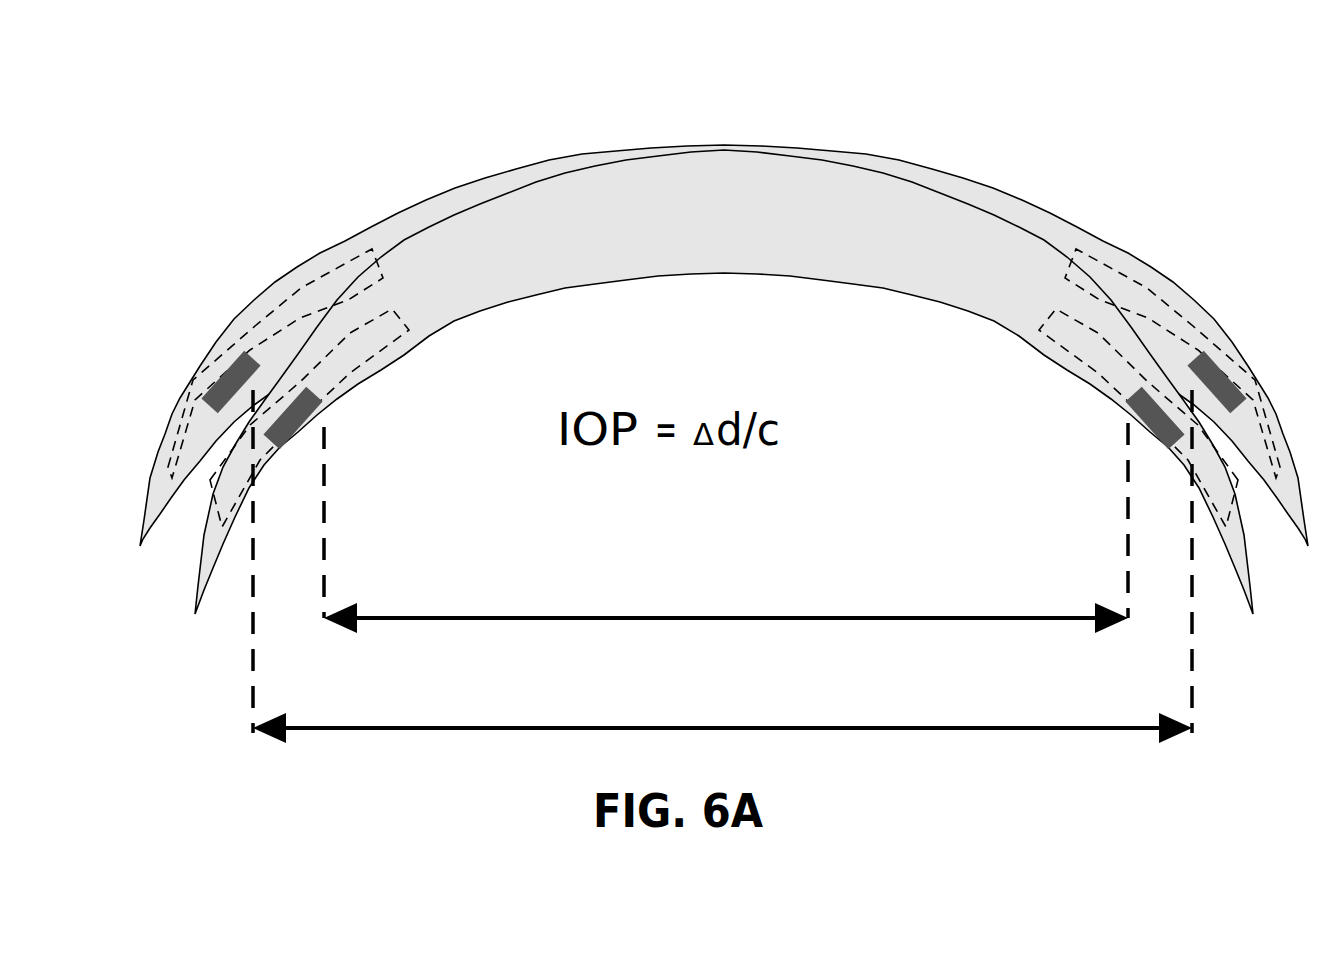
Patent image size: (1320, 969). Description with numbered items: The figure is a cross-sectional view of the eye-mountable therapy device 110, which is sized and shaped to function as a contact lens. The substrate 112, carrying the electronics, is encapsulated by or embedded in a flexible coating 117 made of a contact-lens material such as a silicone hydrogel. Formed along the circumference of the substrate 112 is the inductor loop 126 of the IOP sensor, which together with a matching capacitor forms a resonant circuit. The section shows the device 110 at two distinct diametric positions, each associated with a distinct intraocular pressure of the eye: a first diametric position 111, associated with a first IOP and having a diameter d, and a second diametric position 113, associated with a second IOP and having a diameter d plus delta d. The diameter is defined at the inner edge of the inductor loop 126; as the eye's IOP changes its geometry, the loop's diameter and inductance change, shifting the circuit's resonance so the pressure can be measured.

The eye-mountable therapy device 110 is at (724, 340).
The first diametric position 111 is at (915, 607).
The substrate 112 is at (336, 285).
The second diametric position 113 is at (930, 721).
The flexible coating 117 is at (722, 145).
The inductor loop 126 is at (211, 376).